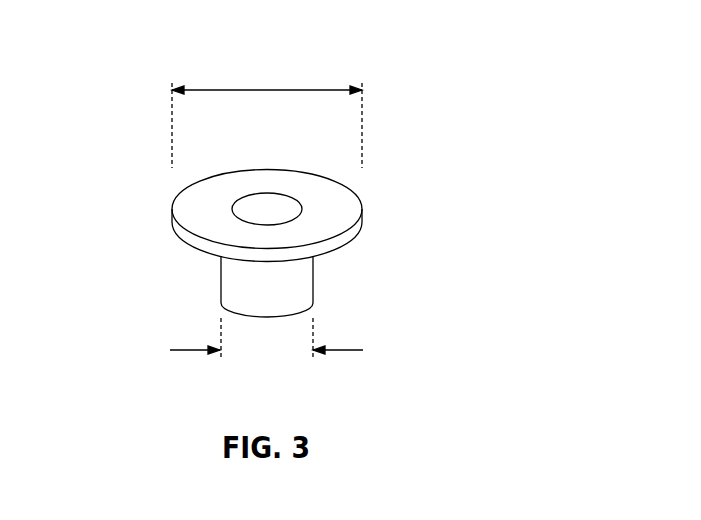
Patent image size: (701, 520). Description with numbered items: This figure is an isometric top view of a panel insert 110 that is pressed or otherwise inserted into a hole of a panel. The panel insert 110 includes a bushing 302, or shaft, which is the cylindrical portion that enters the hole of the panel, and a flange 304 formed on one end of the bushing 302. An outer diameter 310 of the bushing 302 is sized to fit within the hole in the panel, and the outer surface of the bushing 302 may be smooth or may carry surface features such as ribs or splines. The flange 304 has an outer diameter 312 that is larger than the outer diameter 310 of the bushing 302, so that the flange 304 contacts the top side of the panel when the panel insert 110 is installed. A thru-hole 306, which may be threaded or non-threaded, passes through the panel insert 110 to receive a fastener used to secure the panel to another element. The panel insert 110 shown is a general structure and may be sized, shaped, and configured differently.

The panel insert 110 is at (403, 200).
The bushing 302 is at (228, 289).
The flange 304 is at (190, 206).
The thru-hole 306 is at (282, 207).
The outer diameter of the bushing 310 is at (193, 352).
The outer diameter of the flange 312 is at (280, 88).